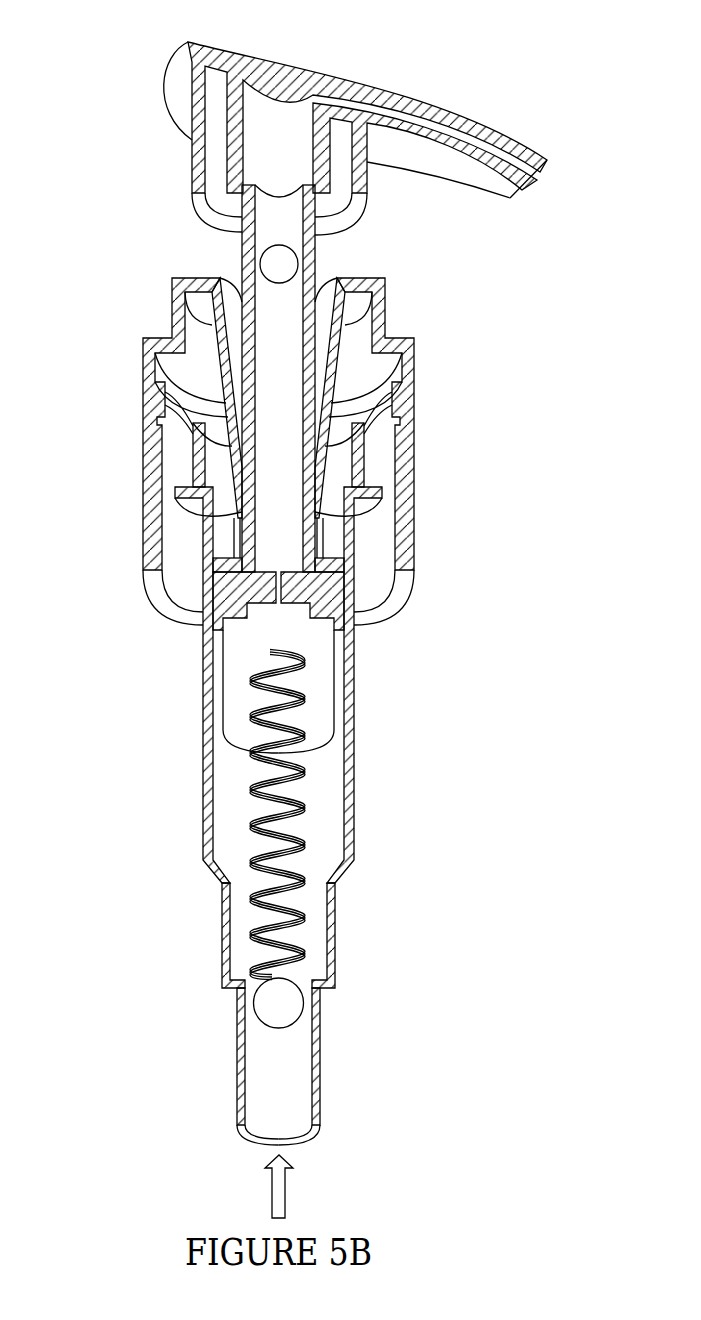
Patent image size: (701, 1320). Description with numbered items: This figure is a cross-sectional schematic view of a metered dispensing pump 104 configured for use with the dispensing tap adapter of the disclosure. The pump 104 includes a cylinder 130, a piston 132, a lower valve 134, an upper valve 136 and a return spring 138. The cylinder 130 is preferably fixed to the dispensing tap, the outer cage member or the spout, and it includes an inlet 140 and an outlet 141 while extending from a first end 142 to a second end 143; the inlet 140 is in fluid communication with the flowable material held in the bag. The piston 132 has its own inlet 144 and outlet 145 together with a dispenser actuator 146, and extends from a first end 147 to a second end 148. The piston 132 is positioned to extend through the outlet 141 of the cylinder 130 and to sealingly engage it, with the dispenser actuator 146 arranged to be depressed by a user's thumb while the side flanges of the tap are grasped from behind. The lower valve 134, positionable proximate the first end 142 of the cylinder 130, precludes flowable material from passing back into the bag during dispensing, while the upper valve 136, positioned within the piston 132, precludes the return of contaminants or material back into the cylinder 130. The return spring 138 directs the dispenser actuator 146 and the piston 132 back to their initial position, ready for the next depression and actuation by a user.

The pump 104 is at (356, 579).
The cylinder 130 is at (224, 767).
The piston 132 is at (316, 302).
The lower valve 134 is at (304, 1002).
The upper valve 136 is at (258, 263).
The return spring 138 is at (308, 843).
The inlet 140 is at (259, 1080).
The outlet 141 is at (211, 632).
The first end 142 is at (218, 920).
The second end 143 is at (328, 630).
The inlet 144 is at (249, 682).
The outlet 145 is at (525, 193).
The dispenser actuator 146 is at (375, 124).
The first end 147 is at (336, 698).
The second end 148 is at (449, 162).